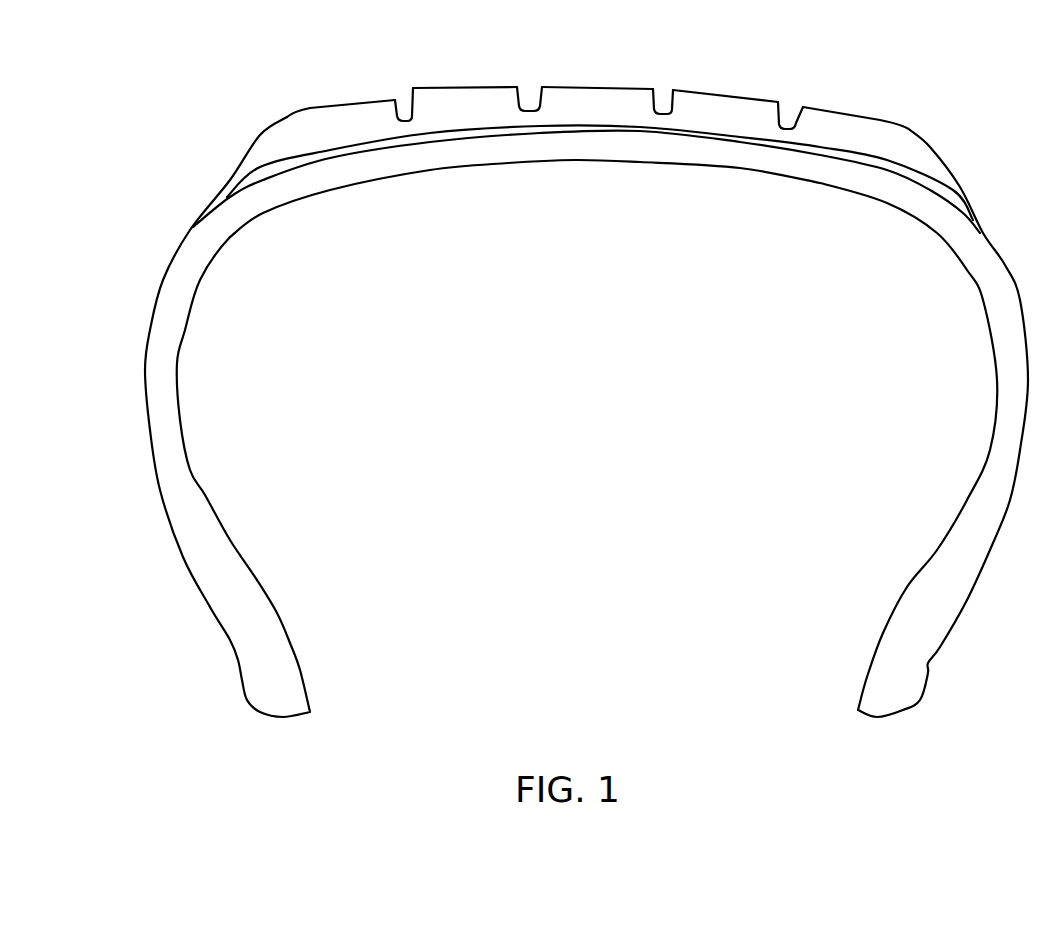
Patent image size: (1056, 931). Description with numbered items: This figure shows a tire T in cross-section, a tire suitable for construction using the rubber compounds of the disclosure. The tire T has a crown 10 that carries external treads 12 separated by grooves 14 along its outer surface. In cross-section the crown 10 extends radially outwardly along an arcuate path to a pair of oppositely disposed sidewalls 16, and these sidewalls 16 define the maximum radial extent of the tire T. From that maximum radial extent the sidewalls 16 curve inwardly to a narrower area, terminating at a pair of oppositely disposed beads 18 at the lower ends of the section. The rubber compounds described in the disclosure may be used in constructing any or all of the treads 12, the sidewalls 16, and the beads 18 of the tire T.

The tire T is at (970, 176).
The crown 10 is at (508, 176).
The external treads 12 is at (458, 88).
The grooves 14 is at (527, 108).
The sidewalls 16 is at (183, 313).
The beads 18 is at (288, 673).